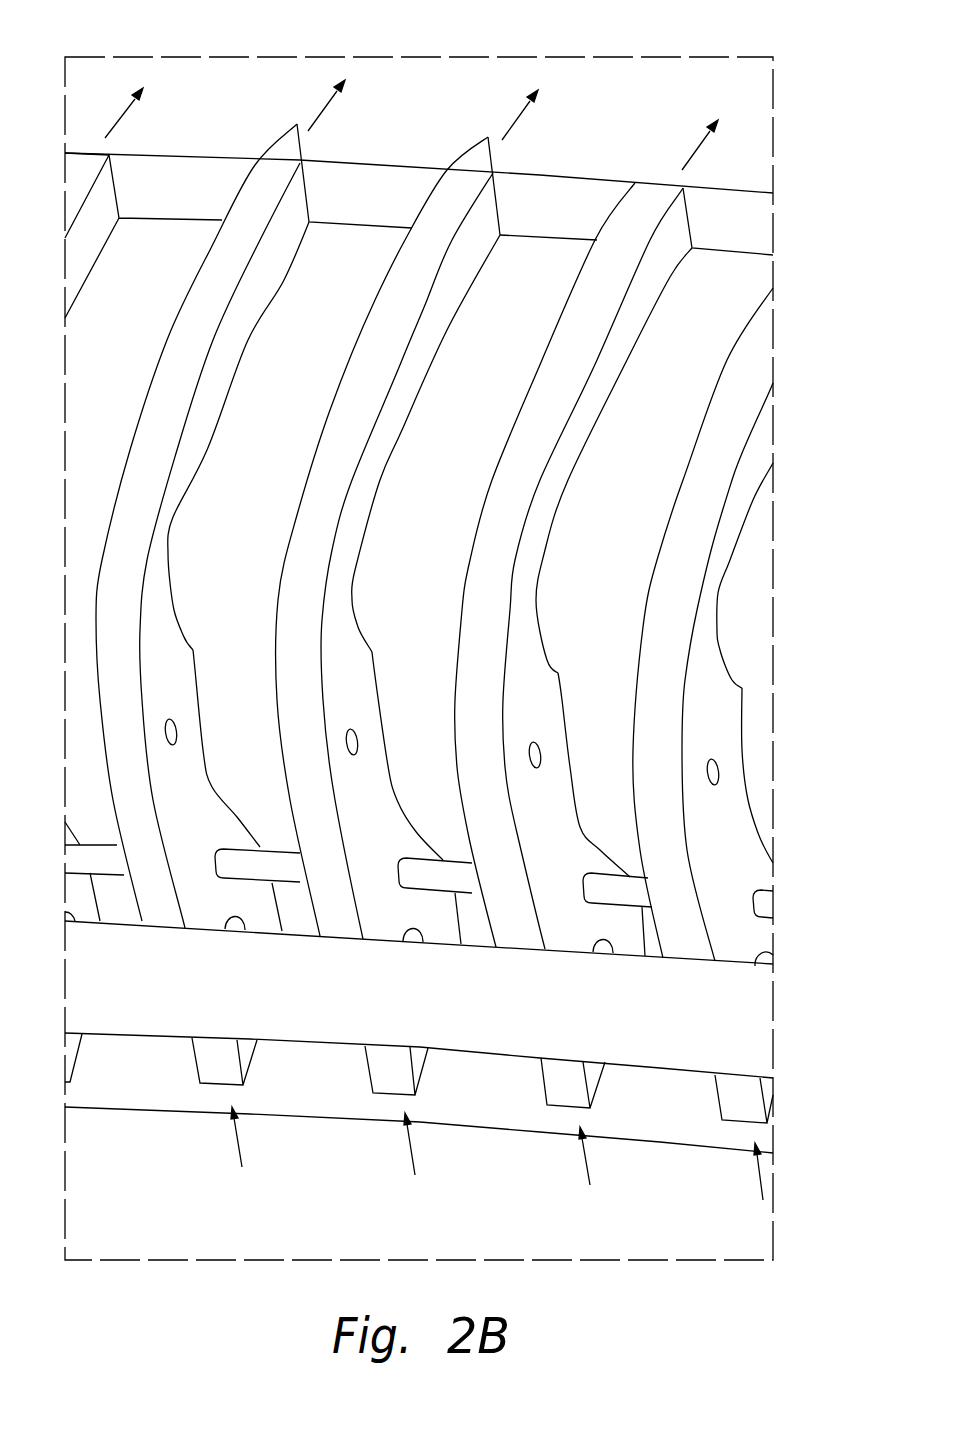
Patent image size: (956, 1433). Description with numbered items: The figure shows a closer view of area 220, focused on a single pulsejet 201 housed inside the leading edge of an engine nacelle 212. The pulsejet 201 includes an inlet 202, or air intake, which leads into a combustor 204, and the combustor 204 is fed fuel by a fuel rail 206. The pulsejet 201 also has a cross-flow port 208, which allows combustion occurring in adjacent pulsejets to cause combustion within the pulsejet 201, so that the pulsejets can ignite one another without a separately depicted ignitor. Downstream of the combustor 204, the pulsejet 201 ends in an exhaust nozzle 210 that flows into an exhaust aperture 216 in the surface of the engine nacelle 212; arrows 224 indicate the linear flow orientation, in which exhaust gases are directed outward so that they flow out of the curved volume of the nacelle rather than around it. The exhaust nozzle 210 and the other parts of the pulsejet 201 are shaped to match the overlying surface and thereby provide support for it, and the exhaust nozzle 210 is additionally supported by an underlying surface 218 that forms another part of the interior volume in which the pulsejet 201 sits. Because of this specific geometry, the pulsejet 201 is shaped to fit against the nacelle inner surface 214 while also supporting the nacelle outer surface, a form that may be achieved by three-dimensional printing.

The pulsejet 201 is at (297, 515).
The inlet 202 is at (378, 1073).
The combustor 204 is at (373, 782).
The fuel rail 206 is at (422, 868).
The cross-flow port 208 is at (350, 737).
The exhaust nozzle 210 is at (433, 220).
The engine nacelle 212 is at (202, 67).
The nacelle inner surface 214 is at (533, 255).
The exhaust aperture 216 is at (475, 148).
The underlying surface 218 is at (468, 452).
The area 220 is at (717, 20).
The arrows 224 is at (697, 147).